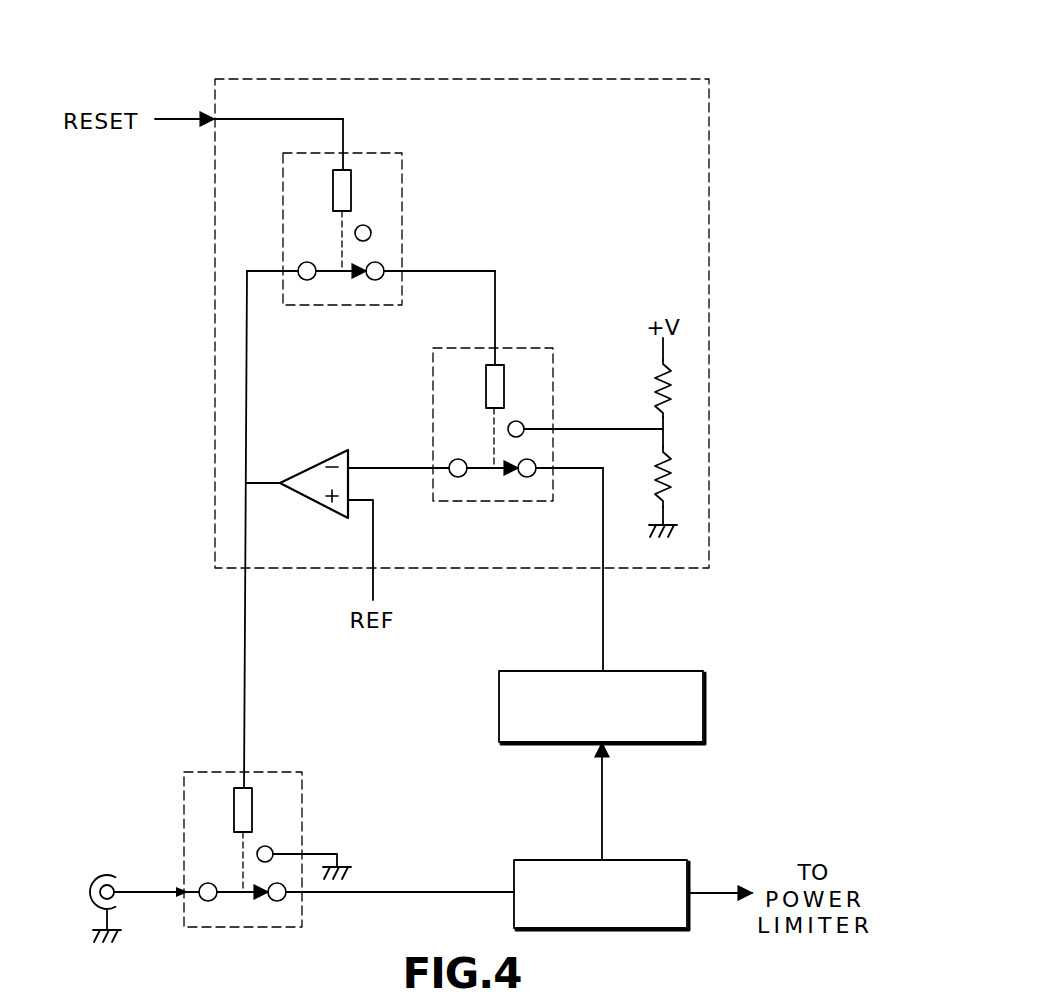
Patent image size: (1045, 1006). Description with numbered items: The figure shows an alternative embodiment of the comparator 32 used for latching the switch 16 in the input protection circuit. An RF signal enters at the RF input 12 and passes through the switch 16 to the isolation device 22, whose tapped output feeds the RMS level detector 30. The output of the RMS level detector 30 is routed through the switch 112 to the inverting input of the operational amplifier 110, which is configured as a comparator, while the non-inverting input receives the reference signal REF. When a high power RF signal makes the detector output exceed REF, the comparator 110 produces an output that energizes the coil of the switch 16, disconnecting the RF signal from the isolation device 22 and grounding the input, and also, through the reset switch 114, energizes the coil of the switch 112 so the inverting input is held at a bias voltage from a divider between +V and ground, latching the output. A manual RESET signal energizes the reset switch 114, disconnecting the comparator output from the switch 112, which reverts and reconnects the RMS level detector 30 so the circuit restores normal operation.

The RF input 12 is at (107, 875).
The switch 16 is at (287, 772).
The isolation device 22 is at (653, 860).
The RMS level detector 30 is at (668, 671).
The comparator 32 is at (640, 79).
The operational amplifier 110 is at (312, 463).
The switch 112 is at (530, 348).
The reset switch 114 is at (378, 153).